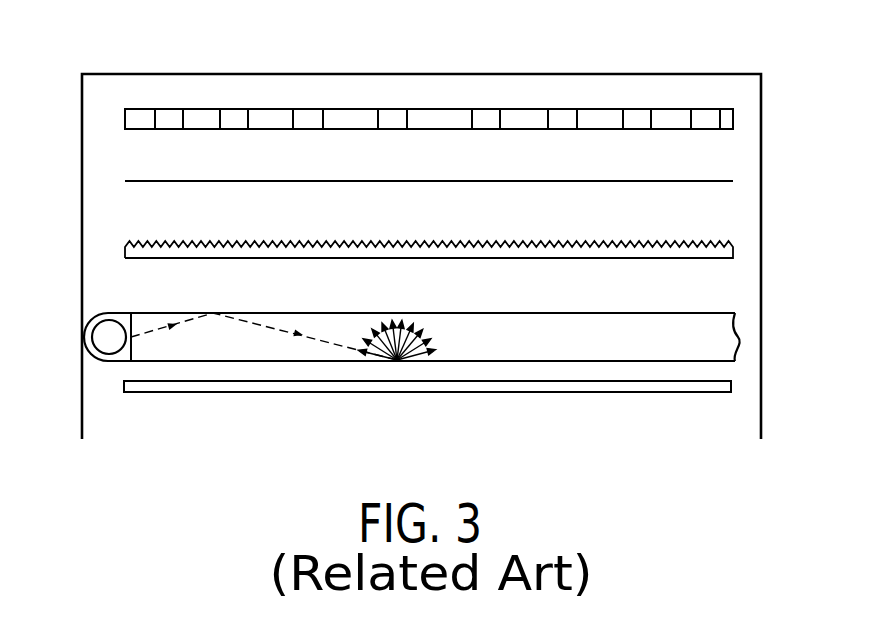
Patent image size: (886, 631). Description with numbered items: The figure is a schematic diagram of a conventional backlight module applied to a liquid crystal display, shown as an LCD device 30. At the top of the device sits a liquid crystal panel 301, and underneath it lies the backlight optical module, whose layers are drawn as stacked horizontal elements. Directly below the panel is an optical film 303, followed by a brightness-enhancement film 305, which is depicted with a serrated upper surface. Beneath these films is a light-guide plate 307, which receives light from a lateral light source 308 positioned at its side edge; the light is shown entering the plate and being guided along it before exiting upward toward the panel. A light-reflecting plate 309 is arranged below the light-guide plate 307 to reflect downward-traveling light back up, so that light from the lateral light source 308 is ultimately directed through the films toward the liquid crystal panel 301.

The LCD device 30 is at (262, 74).
The liquid crystal panel 301 is at (728, 120).
The optical film 303 is at (729, 181).
The brightness-enhancement film 305 is at (733, 250).
The light-guide plate 307 is at (739, 338).
The lateral light source 308 is at (100, 336).
The light-reflecting plate 309 is at (731, 383).